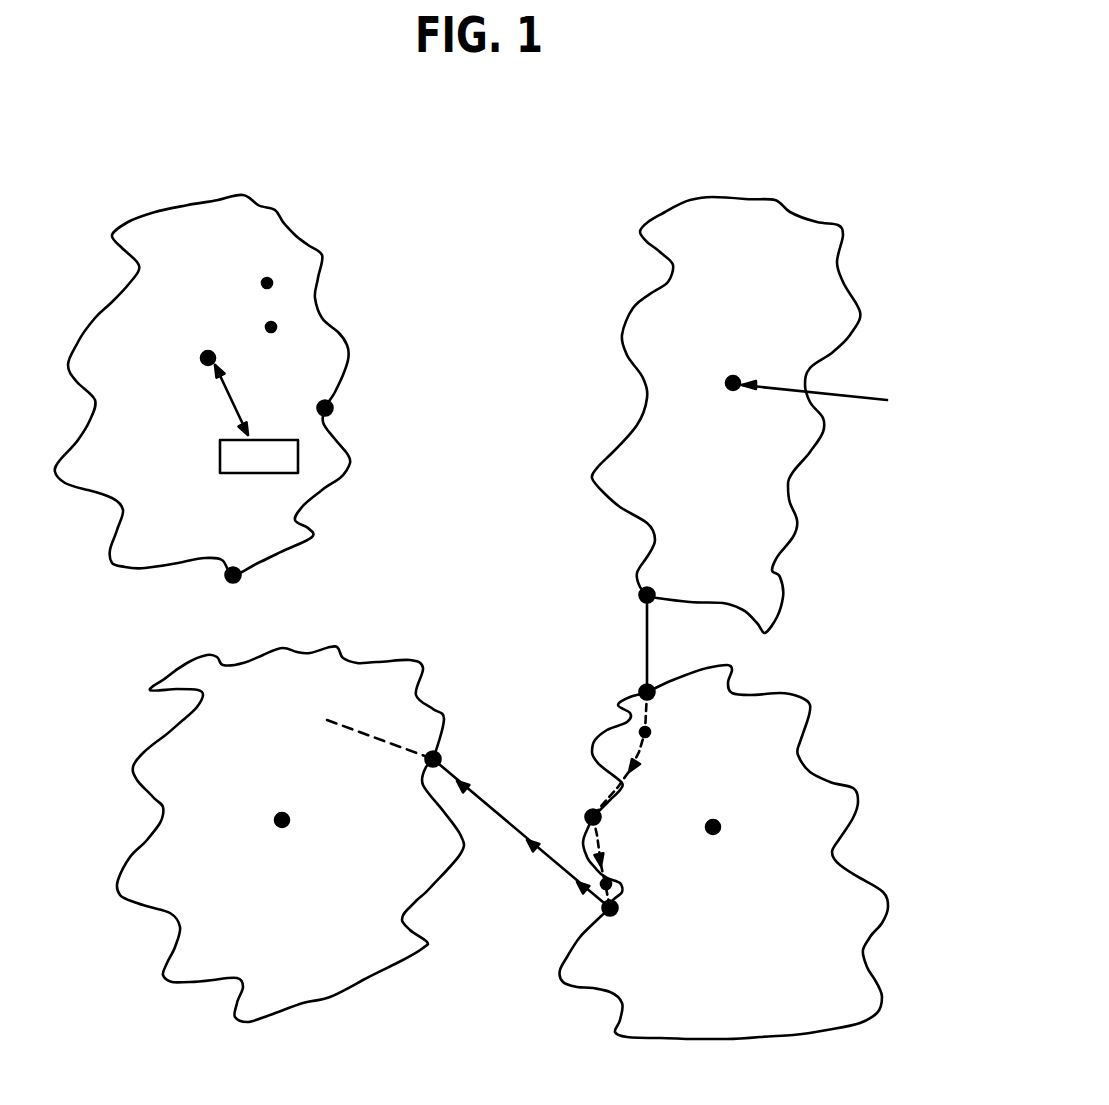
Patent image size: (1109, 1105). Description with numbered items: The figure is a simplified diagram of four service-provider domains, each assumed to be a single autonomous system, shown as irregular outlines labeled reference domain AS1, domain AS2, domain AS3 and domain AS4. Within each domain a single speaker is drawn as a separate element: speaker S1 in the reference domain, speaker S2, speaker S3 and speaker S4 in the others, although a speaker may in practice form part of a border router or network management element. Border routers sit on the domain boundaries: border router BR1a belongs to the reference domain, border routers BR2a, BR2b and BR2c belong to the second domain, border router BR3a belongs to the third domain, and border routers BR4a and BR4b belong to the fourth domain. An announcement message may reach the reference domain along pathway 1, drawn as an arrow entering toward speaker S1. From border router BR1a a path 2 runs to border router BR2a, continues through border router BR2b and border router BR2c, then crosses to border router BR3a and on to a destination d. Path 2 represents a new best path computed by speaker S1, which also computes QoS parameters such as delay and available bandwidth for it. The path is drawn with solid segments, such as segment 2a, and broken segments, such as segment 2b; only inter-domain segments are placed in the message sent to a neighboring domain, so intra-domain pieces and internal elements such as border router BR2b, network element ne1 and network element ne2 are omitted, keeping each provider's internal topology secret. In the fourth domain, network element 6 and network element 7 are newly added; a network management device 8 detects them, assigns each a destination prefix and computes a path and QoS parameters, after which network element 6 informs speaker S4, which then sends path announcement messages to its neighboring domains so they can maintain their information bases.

The reference domain AS1 is at (712, 197).
The domain AS2 is at (593, 988).
The domain AS3 is at (167, 983).
The domain AS4 is at (153, 210).
The speaker S1 is at (741, 365).
The speaker S2 is at (732, 840).
The speaker S3 is at (291, 799).
The speaker S4 is at (212, 335).
The border router BR1a is at (673, 580).
The border router BR2a is at (676, 708).
The border router BR2b is at (627, 824).
The border router BR2c is at (642, 922).
The border router BR3a is at (467, 752).
The border router BR4a is at (267, 588).
The border router BR4b is at (359, 422).
The network element ne1 is at (650, 733).
The network element ne2 is at (613, 882).
The destination d is at (372, 728).
The pathway 1 is at (786, 389).
The path 2 is at (648, 665).
The path segment 2a is at (645, 628).
The path segment 2b is at (607, 730).
The network element 6 is at (279, 280).
The network element 7 is at (284, 325).
The network management device 8 is at (258, 475).